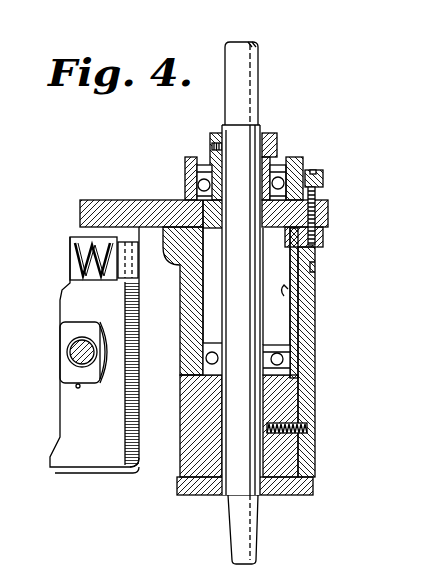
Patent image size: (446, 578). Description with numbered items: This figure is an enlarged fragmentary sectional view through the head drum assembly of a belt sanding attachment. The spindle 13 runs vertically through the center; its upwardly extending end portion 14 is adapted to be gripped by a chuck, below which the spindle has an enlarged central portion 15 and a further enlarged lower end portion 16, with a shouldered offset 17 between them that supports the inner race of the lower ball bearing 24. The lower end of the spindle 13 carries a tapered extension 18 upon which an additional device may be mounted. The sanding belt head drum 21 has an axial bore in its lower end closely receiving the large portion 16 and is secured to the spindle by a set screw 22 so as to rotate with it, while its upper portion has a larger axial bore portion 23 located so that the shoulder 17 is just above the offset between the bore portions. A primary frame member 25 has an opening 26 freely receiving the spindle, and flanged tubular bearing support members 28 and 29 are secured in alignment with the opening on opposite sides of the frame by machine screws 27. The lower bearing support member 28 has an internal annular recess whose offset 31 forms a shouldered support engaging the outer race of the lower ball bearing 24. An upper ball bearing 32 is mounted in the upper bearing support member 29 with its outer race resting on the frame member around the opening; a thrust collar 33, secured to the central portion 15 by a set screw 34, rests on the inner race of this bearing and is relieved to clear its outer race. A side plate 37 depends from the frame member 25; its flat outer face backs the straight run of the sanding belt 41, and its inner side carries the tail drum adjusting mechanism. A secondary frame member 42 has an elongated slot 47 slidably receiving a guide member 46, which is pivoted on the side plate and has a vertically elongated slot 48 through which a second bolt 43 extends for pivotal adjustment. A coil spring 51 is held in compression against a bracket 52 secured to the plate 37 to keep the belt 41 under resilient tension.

The spindle 13 is at (260, 93).
The upwardly extending end portion 14 is at (244, 68).
The enlarged central portion 15 is at (245, 155).
The further enlarged lower end portion 16 is at (247, 468).
The shouldered offset 17 is at (212, 387).
The tapered extension 18 is at (243, 536).
The sanding belt head drum 21 is at (293, 394).
The set screw 22 is at (305, 424).
The larger axial bore portion 23 is at (292, 294).
The lower ball bearing 24 is at (287, 357).
The primary frame member 25 is at (115, 200).
The opening 26 is at (272, 212).
The machine screws 27 is at (320, 171).
The lower bearing support member 28 is at (296, 270).
The upper bearing support member 29 is at (293, 158).
The offset 31 is at (290, 338).
The upper ball bearing 32 is at (190, 166).
The thrust collar 33 is at (214, 133).
The set screw 34 is at (213, 147).
The side plate 37 is at (134, 460).
The sanding belt 41 is at (312, 308).
The secondary frame member 42 is at (62, 305).
The second bolt 43 is at (70, 366).
The guide member 46 is at (68, 328).
The elongated slot 47 is at (78, 388).
The vertically elongated slot 48 is at (70, 348).
The coil spring 51 is at (78, 240).
The bracket 52 is at (113, 281).